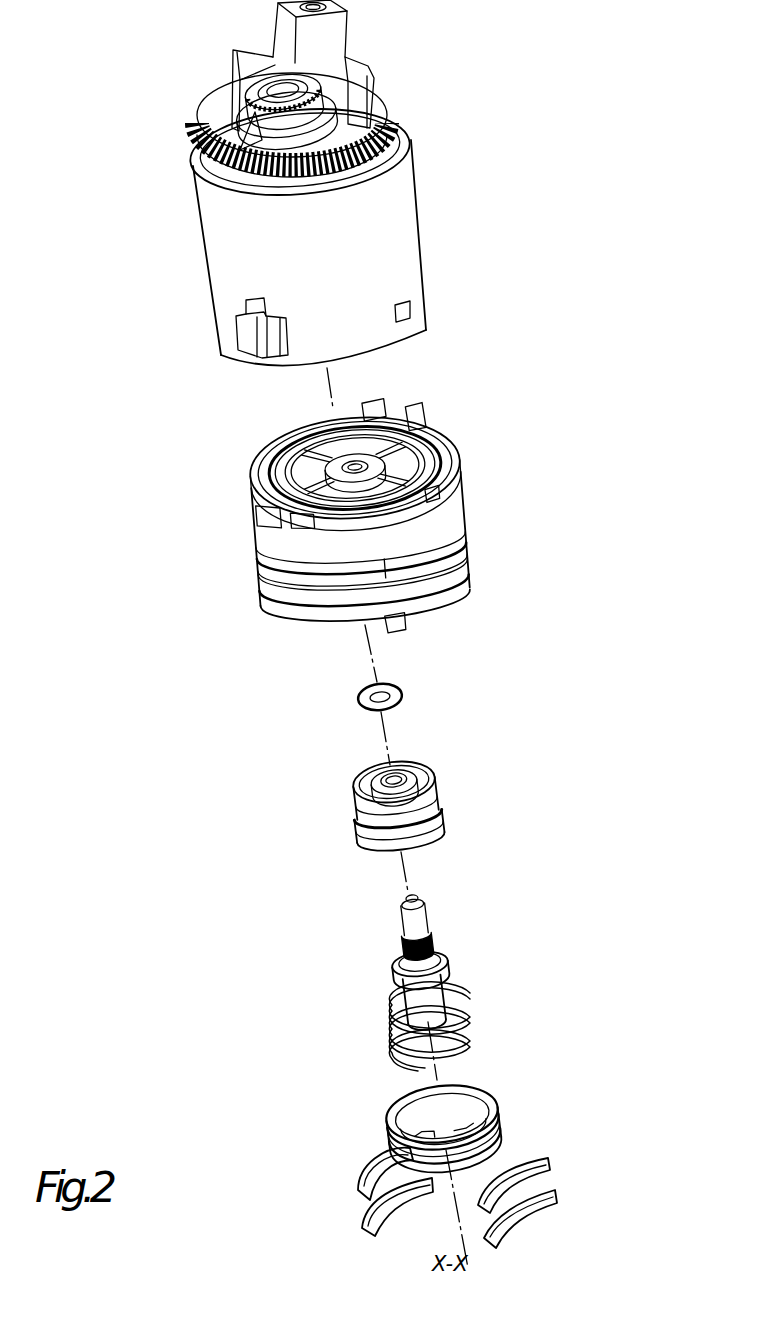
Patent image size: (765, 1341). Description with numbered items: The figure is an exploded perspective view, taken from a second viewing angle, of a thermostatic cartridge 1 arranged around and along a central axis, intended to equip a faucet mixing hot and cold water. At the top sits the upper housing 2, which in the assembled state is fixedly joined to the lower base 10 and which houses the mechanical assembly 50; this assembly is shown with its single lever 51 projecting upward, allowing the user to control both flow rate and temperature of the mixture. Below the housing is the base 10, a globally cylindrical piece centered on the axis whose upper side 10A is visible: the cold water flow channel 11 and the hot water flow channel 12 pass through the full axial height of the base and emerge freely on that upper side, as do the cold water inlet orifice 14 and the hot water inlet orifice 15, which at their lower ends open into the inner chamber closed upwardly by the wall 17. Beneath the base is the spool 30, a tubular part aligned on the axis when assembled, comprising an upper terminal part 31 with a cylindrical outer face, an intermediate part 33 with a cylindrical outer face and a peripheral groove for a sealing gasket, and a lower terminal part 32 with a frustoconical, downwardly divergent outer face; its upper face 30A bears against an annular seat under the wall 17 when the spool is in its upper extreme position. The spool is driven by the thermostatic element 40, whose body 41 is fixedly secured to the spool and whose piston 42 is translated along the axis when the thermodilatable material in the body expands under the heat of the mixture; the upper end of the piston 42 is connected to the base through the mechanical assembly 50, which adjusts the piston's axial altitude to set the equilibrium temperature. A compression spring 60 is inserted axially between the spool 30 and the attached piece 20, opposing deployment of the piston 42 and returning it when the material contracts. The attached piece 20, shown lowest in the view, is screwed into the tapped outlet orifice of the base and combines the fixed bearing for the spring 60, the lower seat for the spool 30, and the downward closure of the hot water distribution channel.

The thermostatic cartridge 1 is at (700, 1240).
The upper housing 2 is at (396, 223).
The lower base 10 is at (466, 508).
The upper side of the base 10A is at (272, 437).
The cold water flow channel 11 is at (431, 463).
The hot water flow channel 12 is at (256, 479).
The cold water inlet orifice 14 is at (407, 455).
The hot water inlet orifice 15 is at (292, 493).
The wall 17 is at (354, 465).
The attached piece 20 is at (510, 1117).
The spool 30 is at (450, 795).
The upper face of the spool 30A is at (360, 764).
The upper terminal part 31 is at (357, 802).
The lower terminal part 32 is at (362, 843).
The intermediate part 33 is at (357, 822).
The thermostatic element 40 is at (460, 952).
The body 41 is at (410, 993).
The piston 42 is at (410, 893).
The mechanical assembly 50 is at (356, 27).
The lever 51 is at (283, 20).
The compression spring 60 is at (478, 1023).